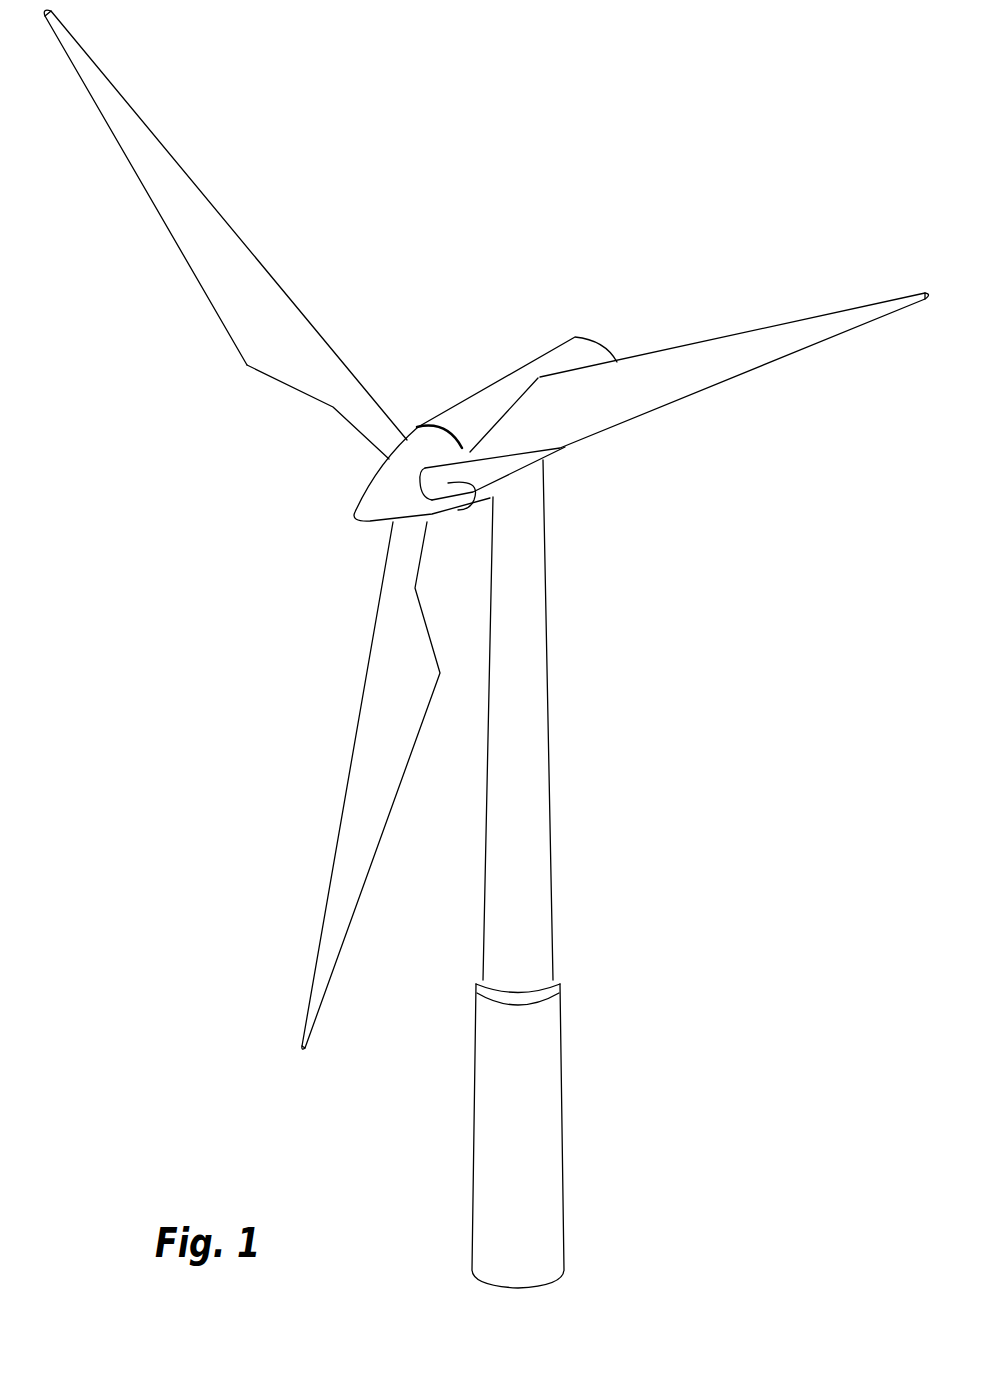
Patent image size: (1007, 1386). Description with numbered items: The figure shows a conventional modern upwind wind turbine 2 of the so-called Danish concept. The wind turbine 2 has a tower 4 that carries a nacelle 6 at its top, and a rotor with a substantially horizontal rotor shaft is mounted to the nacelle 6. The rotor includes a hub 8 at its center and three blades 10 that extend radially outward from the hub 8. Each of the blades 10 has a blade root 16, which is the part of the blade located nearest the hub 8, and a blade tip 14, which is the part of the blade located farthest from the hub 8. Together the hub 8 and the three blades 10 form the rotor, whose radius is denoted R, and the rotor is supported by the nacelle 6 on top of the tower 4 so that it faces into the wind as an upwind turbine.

The wind turbine 2 is at (486, 649).
The tower 4 is at (537, 727).
The nacelle 6 is at (480, 405).
The hub 8 is at (380, 495).
The blades 10 is at (259, 334).
The blade tip 14 is at (94, 76).
The blade root 16 is at (387, 447).